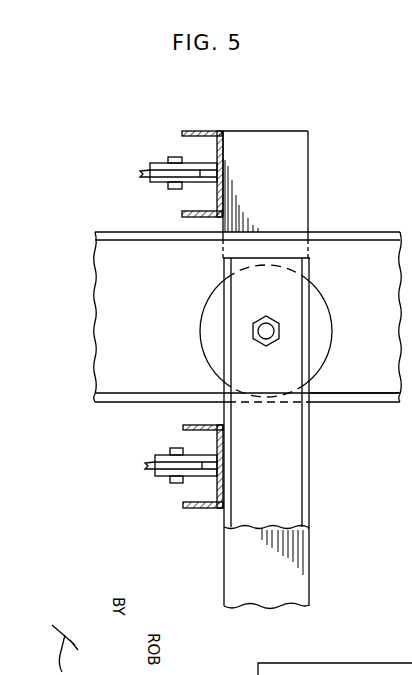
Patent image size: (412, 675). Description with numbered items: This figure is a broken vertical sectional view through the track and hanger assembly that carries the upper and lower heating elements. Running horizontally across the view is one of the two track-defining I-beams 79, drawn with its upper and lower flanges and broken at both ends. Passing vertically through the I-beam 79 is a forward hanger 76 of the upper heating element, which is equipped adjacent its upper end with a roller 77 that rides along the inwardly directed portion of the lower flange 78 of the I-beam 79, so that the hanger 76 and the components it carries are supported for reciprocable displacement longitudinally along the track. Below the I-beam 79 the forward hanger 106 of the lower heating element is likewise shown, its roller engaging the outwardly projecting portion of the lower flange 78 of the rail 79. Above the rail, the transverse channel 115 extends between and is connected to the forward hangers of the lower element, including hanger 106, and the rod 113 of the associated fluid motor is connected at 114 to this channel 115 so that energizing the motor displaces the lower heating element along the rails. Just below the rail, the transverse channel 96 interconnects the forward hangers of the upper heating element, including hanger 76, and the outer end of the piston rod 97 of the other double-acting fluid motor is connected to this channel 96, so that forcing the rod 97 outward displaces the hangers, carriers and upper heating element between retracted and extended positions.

The forward hanger 76 is at (312, 512).
The roller 77 is at (316, 378).
The lower flange 78 is at (372, 397).
The track-defining I-beam 79 is at (348, 232).
The transverse channel 96 is at (186, 508).
The piston rod 97 is at (152, 466).
The forward hanger 106 is at (250, 140).
The rod 113 is at (148, 170).
The connection 114 is at (172, 157).
The channel 115 is at (196, 131).